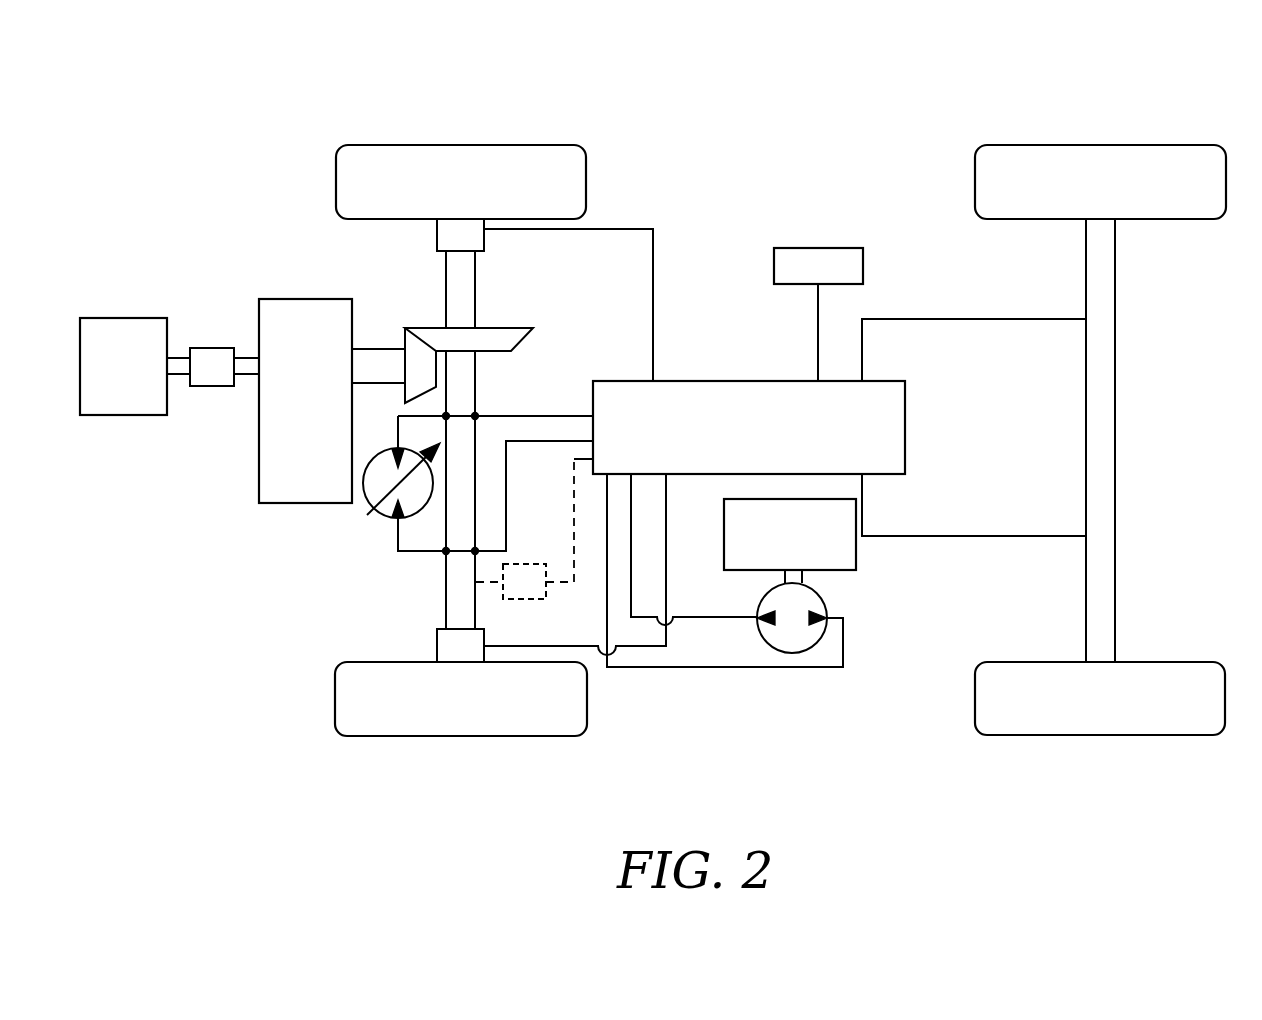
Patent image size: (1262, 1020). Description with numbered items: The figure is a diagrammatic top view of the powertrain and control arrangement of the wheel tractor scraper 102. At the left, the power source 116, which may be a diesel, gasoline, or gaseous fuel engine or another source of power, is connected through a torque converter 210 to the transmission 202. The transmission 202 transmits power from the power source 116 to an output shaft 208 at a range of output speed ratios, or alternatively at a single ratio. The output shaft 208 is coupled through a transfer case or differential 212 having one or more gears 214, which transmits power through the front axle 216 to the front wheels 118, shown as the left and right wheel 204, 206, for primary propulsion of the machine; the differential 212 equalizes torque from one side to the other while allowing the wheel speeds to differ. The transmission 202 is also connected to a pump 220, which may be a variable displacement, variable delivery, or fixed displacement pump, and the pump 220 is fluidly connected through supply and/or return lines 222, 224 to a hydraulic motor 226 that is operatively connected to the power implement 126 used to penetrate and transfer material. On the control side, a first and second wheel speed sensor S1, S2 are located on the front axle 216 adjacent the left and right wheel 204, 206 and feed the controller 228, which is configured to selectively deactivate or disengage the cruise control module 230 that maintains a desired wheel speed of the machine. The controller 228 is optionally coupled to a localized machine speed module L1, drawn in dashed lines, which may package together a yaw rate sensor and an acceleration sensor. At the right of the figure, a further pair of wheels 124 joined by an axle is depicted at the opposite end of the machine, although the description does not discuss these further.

The wheel tractor scraper 102 is at (1158, 104).
The power source 116 is at (133, 382).
The front wheels 118 is at (512, 130).
The rear wheels 124 is at (1116, 197).
The implement 126 is at (807, 549).
The transmission 202 is at (322, 411).
The left wheel 204 is at (473, 711).
The right wheel 206 is at (473, 197).
The output shaft 208 is at (393, 381).
The torque converter 210 is at (212, 387).
The differential 212 is at (540, 353).
The gears 214 is at (515, 327).
The front axle 216 is at (446, 281).
The pump 220 is at (386, 518).
The supply and/or return line 222 is at (507, 492).
The supply and/or return line 224 is at (534, 414).
The hydraulic motor 226 is at (825, 604).
The controller 228 is at (768, 444).
The cruise control module 230 is at (835, 279).
The first wheel speed sensor S1 is at (474, 657).
The second wheel speed sensor S2 is at (474, 250).
The localized machine speed module L1 is at (535, 596).